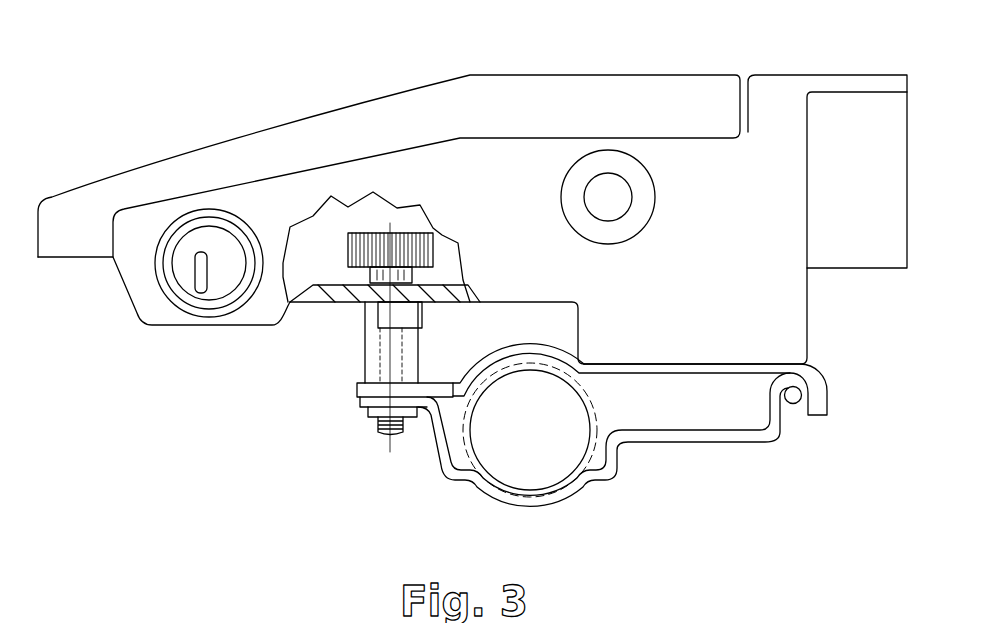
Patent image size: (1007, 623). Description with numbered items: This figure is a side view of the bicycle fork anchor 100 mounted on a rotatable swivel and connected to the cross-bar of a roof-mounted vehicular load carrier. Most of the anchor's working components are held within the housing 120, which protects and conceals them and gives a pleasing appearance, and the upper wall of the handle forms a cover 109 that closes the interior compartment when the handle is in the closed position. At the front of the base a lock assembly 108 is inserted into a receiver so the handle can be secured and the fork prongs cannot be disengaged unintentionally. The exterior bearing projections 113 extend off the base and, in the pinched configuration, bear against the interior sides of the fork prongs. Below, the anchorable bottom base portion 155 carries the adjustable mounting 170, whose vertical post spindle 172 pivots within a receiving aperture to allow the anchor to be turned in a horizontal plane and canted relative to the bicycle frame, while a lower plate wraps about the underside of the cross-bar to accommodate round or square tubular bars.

The bicycle fork anchor 100 is at (218, 90).
The lock assembly 108 is at (140, 315).
The cover 109 is at (377, 102).
The exterior bearing projections 113 is at (622, 228).
The housing 120 is at (515, 222).
The anchorable bottom base portion 155 is at (352, 364).
The adjustable mounting 170 is at (367, 333).
The spindle 172 is at (412, 365).